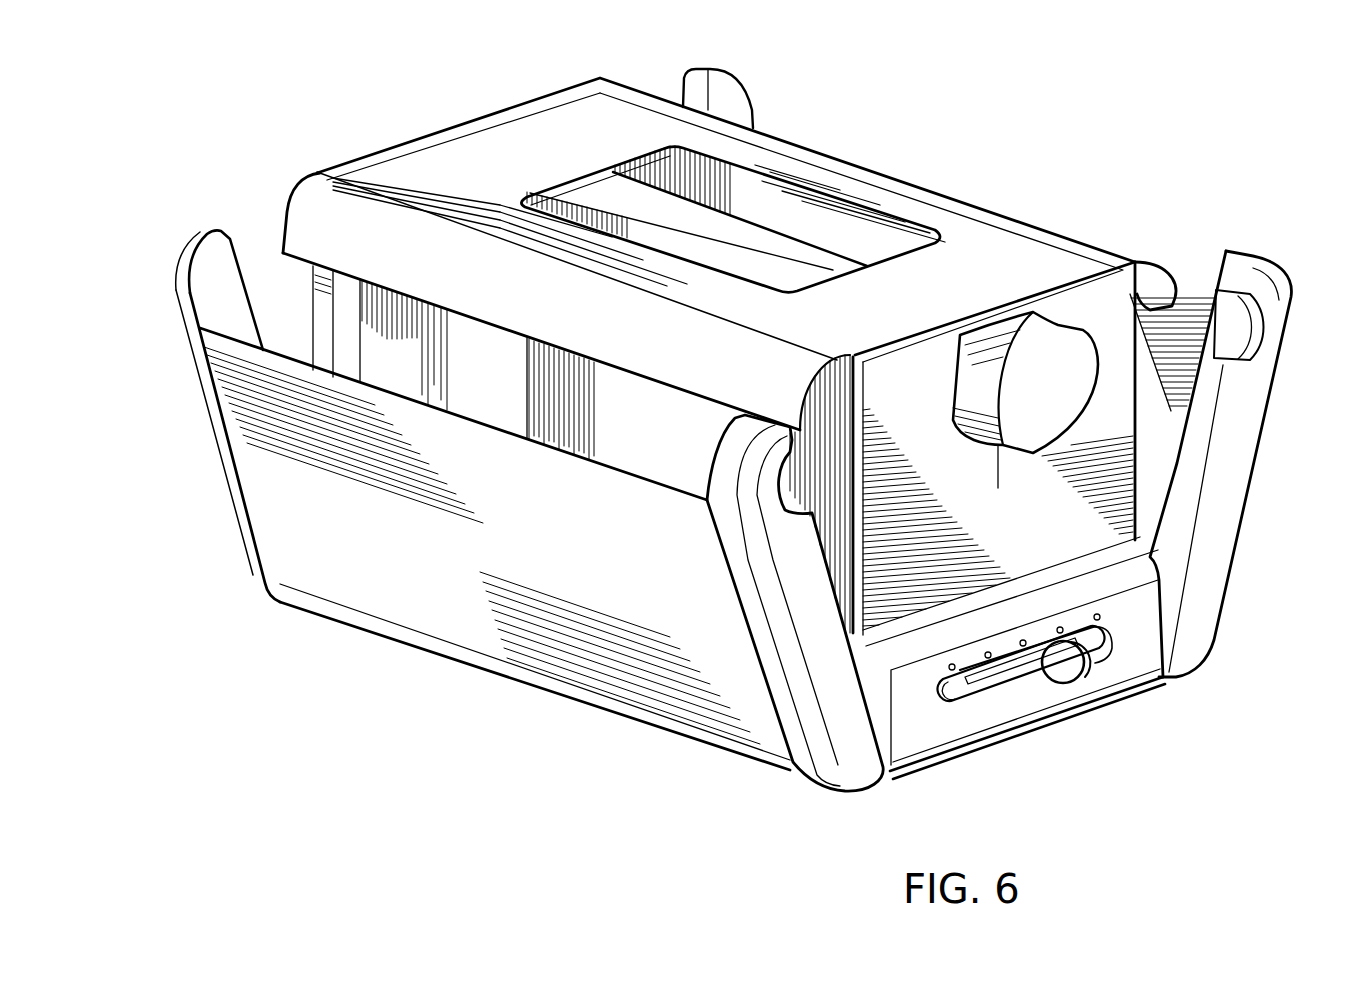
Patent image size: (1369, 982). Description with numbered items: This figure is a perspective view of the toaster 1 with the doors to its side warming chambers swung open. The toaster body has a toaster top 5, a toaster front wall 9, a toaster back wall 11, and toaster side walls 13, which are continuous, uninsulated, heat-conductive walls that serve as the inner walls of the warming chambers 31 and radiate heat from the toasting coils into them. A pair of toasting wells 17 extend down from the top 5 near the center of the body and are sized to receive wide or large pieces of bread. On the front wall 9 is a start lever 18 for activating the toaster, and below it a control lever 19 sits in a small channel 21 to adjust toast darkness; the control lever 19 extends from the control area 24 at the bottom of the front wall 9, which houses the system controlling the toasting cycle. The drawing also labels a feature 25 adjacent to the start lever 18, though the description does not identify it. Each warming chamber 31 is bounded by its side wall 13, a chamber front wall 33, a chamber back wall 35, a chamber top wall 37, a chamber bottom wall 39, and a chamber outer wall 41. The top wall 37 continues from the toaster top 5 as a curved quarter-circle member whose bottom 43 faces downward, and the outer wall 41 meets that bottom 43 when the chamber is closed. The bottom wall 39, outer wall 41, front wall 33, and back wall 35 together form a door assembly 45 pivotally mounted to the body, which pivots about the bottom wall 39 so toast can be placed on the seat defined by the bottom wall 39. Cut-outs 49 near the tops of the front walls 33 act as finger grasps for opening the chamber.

The toaster 1 is at (892, 140).
The toaster top 5 is at (561, 137).
The toaster front wall 9 is at (1127, 352).
The toaster back wall 11 is at (411, 147).
The toaster side wall 13 is at (681, 435).
The toasting well 17 is at (733, 210).
The start lever 18 is at (1038, 338).
The control lever 19 is at (1065, 675).
The channel 21 is at (963, 695).
The control area 24 is at (1123, 660).
The knob recess 25 is at (1023, 343).
The warming chamber 31 is at (310, 322).
The chamber front wall 33 is at (837, 737).
The chamber back wall 35 is at (733, 77).
The chamber top wall 37 is at (308, 227).
The chamber bottom wall 39 is at (550, 680).
The chamber outer wall 41 is at (443, 598).
The bottom of chamber top wall 43 is at (1150, 311).
The door assembly 45 is at (320, 622).
The cut-out 49 is at (1255, 326).